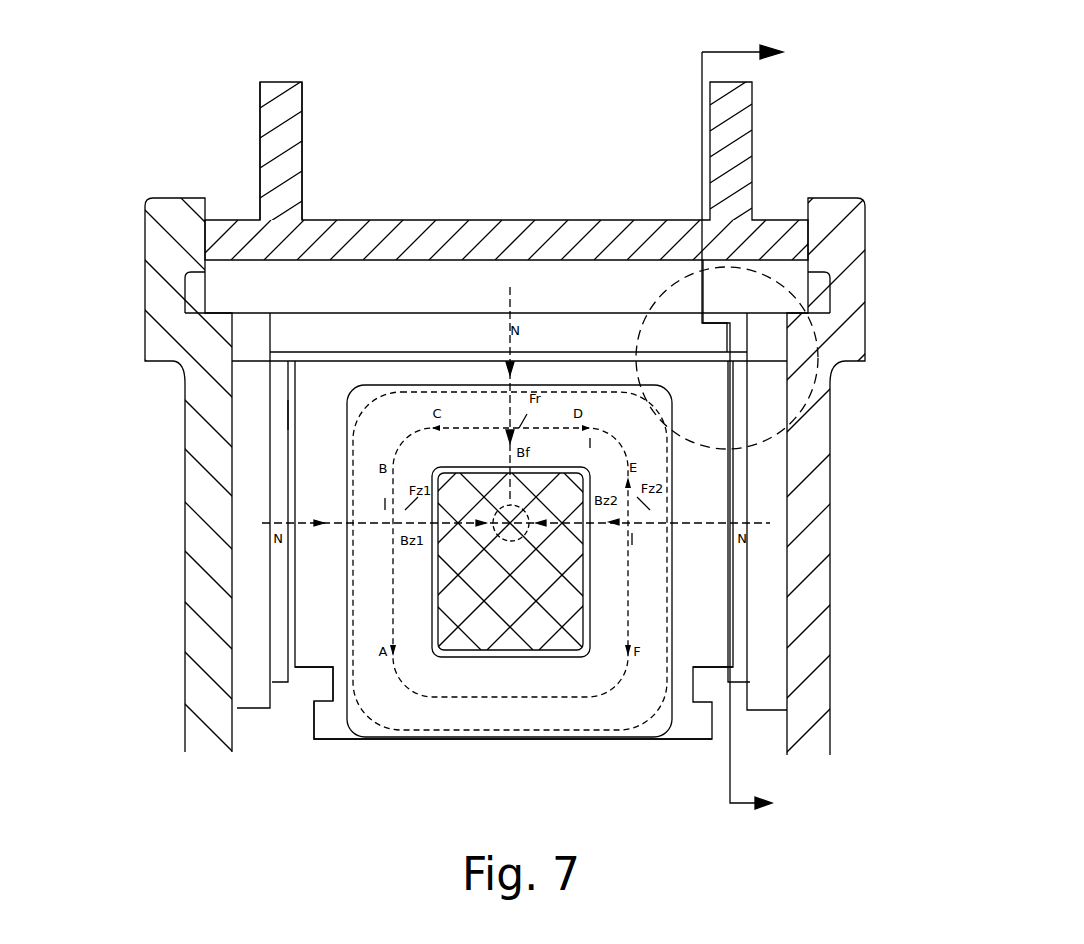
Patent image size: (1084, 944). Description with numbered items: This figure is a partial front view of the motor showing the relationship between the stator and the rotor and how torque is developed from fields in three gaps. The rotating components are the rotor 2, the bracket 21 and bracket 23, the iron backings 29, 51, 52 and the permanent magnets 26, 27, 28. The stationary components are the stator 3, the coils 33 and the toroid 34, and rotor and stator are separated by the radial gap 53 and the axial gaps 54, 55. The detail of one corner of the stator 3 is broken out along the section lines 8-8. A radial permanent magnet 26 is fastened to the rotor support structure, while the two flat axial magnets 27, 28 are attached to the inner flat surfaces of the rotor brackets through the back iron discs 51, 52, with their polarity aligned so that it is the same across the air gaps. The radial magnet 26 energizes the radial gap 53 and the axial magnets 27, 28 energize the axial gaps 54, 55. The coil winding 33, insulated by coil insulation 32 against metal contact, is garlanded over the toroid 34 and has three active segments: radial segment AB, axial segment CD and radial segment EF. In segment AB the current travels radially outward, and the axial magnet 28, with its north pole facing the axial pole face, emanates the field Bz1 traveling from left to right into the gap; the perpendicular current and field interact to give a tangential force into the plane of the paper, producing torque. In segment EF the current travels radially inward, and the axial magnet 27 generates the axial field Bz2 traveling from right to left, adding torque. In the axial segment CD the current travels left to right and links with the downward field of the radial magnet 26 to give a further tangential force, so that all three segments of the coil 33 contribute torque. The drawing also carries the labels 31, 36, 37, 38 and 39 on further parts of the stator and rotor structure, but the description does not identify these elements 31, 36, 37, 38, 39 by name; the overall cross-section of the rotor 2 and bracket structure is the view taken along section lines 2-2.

The rotor 2 is at (512, 168).
The stator 3 is at (589, 754).
The section lines 8-8 is at (757, 255).
The rotor bracket 21 is at (847, 332).
The bracket 23 is at (276, 80).
The radial permanent magnet 26 is at (318, 327).
The axial permanent magnet 27 is at (740, 673).
The axial permanent magnet 28 is at (277, 395).
The iron backing 29 is at (377, 277).
The spacer 31 is at (447, 375).
The coil insulation 32 is at (656, 440).
The coil winding 33 is at (410, 710).
The toroid 34 is at (478, 622).
The right permanent magnet 36 is at (710, 623).
The housing flange 37 is at (310, 390).
The bobbin flange 38 is at (323, 725).
The bobbin step 39 is at (303, 693).
The back iron disc 51 is at (770, 698).
The back iron disc 52 is at (247, 470).
The radial air gap 53 is at (402, 352).
The axial air gap 54 is at (287, 415).
The axial air gap 55 is at (733, 680).
The axial magnetic field Bz1 is at (262, 525).
The axial magnetic field Bz2 is at (748, 521).